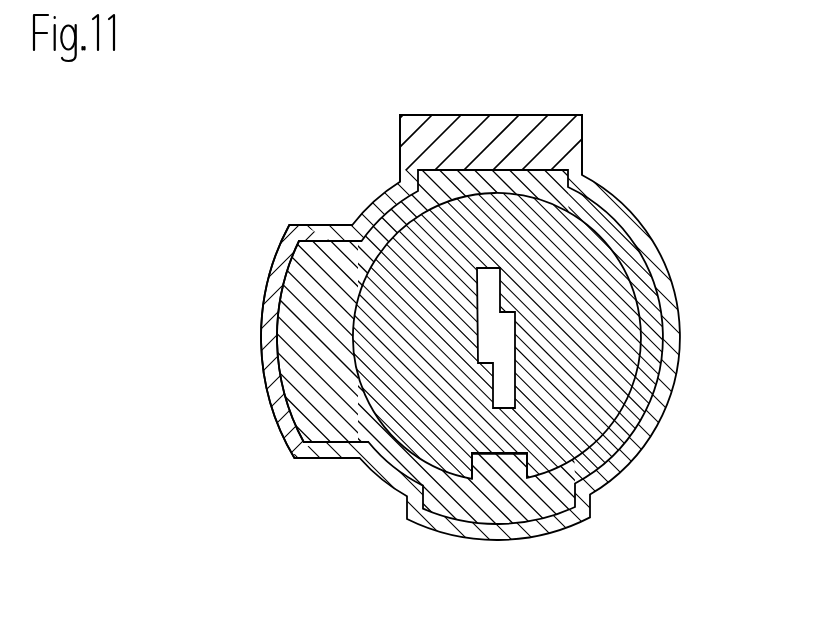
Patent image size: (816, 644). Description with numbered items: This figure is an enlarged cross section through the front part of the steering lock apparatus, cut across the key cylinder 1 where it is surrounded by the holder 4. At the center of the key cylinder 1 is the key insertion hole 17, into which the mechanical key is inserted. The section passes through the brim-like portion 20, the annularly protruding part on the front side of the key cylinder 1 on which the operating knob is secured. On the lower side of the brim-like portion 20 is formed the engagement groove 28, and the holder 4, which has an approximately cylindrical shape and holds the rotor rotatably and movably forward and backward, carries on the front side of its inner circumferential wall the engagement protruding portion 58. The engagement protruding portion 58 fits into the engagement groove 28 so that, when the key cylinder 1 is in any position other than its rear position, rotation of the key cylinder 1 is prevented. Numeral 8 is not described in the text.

The key cylinder 1 is at (408, 272).
The holder 4 is at (317, 358).
The housing top tab 8 is at (560, 147).
The key insertion hole 17 is at (493, 338).
The brim-like portion 20 is at (597, 398).
The engagement groove 28 is at (493, 457).
The engagement protruding portion 58 is at (513, 467).